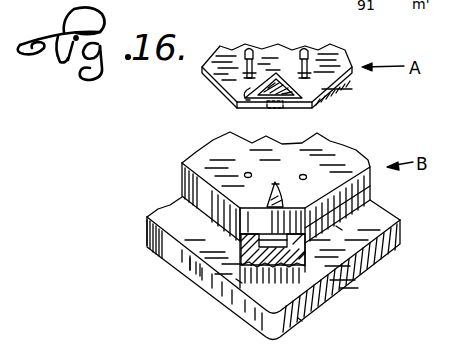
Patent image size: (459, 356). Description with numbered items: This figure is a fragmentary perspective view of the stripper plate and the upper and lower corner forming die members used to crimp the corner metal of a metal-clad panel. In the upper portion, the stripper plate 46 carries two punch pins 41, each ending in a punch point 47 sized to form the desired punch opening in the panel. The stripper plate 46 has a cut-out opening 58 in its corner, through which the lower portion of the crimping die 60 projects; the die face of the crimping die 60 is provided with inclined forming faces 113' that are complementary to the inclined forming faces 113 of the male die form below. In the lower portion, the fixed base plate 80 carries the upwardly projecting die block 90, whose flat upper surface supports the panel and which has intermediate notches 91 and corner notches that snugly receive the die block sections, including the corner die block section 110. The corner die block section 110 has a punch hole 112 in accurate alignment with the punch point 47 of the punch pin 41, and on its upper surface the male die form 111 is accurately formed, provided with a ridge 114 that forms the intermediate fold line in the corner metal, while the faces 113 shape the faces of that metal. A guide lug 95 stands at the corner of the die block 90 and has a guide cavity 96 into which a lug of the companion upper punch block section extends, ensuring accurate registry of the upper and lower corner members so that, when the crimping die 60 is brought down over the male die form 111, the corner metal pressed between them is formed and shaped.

The punch pin 41 is at (253, 38).
The crimping die 60 is at (278, 88).
The stripper plate 46 is at (234, 77).
The punch point 47 is at (352, 90).
The cut-out opening 58 is at (247, 91).
The inclined forming faces 113' is at (282, 119).
The fixed base plate 80 is at (388, 256).
The corner die block section 110 is at (330, 180).
The punch hole 112 is at (246, 173).
The inclined forming faces 113 is at (293, 194).
The male die form 111 is at (267, 181).
The ridge 114 is at (276, 212).
The die block 90 is at (217, 182).
The guide lug 95 is at (240, 280).
The guide cavity 96 is at (302, 317).
The intermediate notches 91 is at (343, 200).